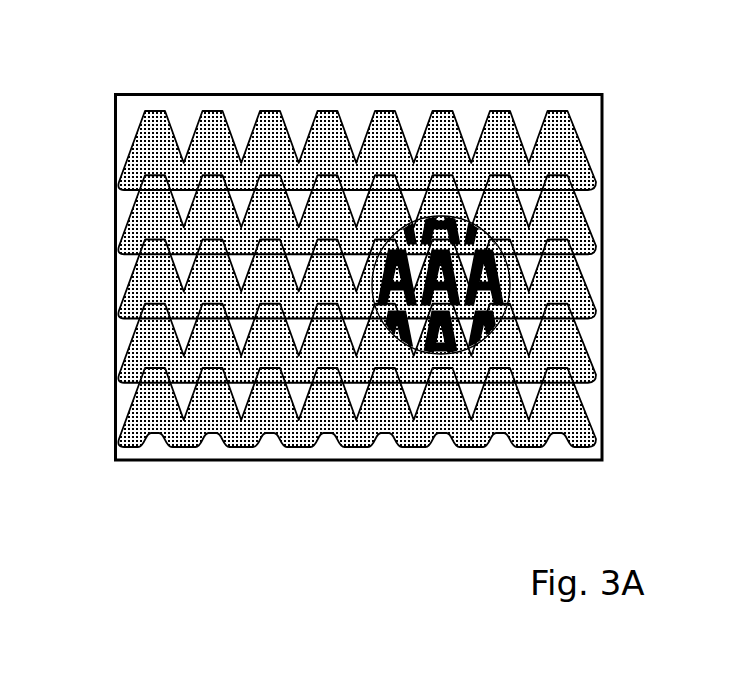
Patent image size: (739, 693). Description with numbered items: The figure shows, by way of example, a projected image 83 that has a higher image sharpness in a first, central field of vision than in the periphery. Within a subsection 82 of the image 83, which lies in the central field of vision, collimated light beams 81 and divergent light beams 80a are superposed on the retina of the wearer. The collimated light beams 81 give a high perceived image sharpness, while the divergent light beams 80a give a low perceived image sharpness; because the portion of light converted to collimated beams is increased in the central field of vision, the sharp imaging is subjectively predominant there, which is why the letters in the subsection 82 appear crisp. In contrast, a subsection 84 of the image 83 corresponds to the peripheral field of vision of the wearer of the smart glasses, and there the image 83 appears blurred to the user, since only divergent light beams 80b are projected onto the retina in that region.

The image 83 is at (101, 58).
The subsection 82 is at (408, 222).
The collimated light beams 81 is at (486, 276).
The subsection 84 is at (215, 452).
The divergent light beams 80a is at (375, 310).
The divergent light beams 80b is at (413, 308).